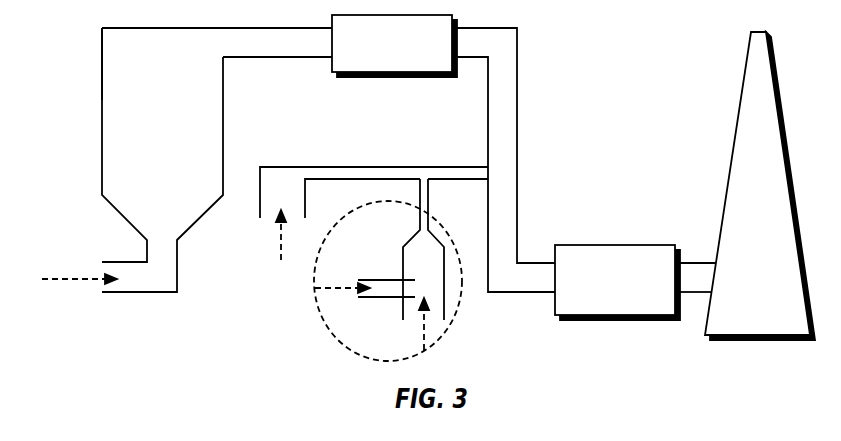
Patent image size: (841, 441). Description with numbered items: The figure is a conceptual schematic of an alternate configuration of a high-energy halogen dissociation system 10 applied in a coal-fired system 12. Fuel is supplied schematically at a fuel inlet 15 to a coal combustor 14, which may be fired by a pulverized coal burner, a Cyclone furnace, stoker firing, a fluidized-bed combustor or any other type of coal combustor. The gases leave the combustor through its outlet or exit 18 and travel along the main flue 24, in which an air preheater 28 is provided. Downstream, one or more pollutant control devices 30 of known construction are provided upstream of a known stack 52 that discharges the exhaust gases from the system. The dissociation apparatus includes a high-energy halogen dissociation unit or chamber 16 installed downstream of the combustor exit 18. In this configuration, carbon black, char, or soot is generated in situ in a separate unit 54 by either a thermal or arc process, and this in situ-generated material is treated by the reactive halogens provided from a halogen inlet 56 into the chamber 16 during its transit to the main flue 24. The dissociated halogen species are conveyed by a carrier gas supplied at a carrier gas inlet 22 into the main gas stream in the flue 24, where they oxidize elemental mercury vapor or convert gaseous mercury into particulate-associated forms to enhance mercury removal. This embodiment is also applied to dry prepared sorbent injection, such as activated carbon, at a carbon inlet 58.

The high-energy halogen dissociation system 10 is at (372, 362).
The coal-fired system 12 is at (102, 72).
The coal combustor 14 is at (152, 142).
The fuel inlet 15 is at (122, 275).
The high-energy halogen dissociation unit 16 is at (412, 267).
The outlet of the coal combustor 18 is at (223, 38).
The carrier gas inlet 22 is at (427, 338).
The flue 24 is at (507, 207).
The air preheater 28 is at (378, 56).
The pollutant control device 30 is at (600, 293).
The stack 52 is at (743, 300).
The separate unit 54 is at (283, 180).
The halogen inlet 56 is at (328, 288).
The carbon inlet 58 is at (281, 247).